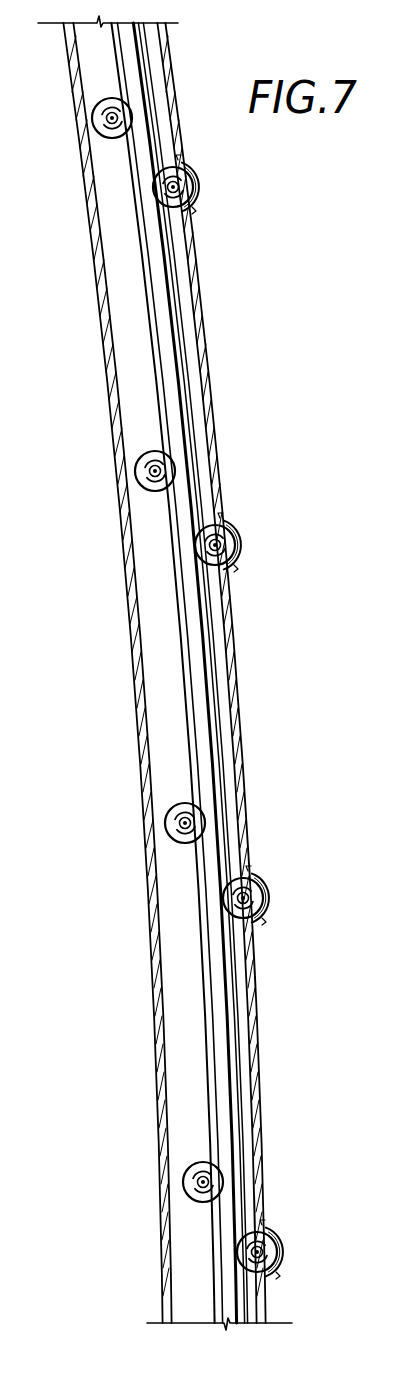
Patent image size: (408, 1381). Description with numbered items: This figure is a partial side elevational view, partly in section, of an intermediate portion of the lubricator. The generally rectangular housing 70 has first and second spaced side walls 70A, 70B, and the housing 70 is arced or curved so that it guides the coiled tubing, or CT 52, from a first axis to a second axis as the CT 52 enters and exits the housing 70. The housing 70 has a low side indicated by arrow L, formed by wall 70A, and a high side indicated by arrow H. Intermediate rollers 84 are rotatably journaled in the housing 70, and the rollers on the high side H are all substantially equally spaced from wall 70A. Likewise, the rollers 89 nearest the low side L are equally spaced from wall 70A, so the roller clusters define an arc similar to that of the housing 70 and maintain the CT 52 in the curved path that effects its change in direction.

The low side L is at (104, 353).
The housing 70 is at (178, 673).
The first side wall 70A is at (130, 618).
The second side wall 70B is at (222, 490).
The CT 52 is at (173, 290).
The rollers 89 is at (148, 472).
The intermediate rollers 84 is at (233, 547).
The high side H is at (235, 673).